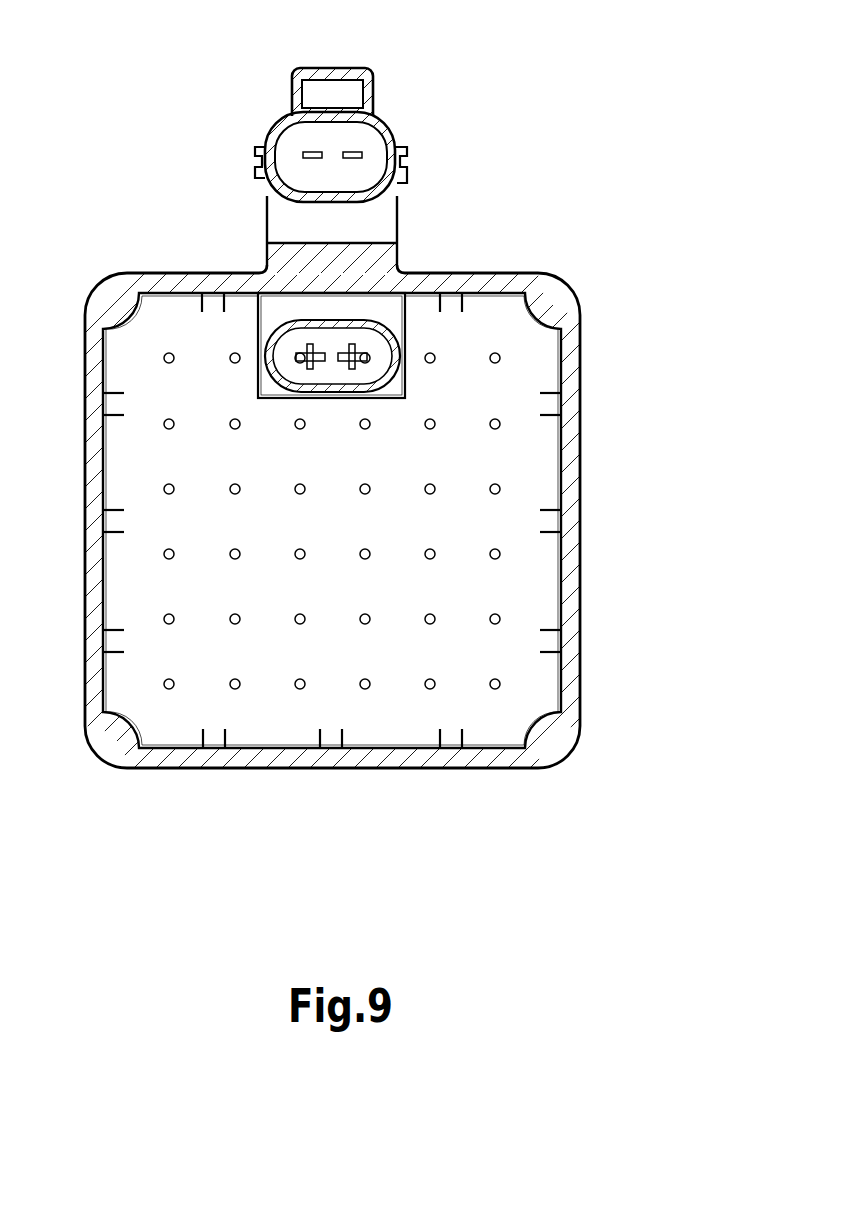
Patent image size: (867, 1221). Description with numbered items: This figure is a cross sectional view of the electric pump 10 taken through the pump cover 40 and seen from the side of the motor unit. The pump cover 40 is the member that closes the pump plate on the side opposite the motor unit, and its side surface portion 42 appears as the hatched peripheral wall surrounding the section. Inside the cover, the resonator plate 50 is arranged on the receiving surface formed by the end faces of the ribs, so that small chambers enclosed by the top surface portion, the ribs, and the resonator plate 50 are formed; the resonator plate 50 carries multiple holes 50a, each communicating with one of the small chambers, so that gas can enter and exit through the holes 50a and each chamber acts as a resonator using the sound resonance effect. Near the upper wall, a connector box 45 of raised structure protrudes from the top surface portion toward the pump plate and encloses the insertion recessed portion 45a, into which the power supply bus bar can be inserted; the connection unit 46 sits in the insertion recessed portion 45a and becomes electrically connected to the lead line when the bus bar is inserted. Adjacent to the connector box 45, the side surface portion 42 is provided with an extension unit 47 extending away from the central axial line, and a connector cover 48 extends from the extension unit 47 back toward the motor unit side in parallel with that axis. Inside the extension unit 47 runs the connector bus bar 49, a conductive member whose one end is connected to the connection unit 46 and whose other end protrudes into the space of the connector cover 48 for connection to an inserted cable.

The electric pump 10 is at (485, 78).
The pump cover 40 is at (338, 792).
The side surface portion 42 is at (165, 758).
The connector box 45 is at (378, 320).
The insertion recessed portion 45a is at (303, 347).
The connection unit 46 is at (310, 369).
The extension unit 47 is at (387, 217).
The connector cover 48 is at (275, 128).
The connector bus bar 49 is at (312, 160).
The resonator plate 50 is at (537, 462).
The holes 50a is at (495, 562).